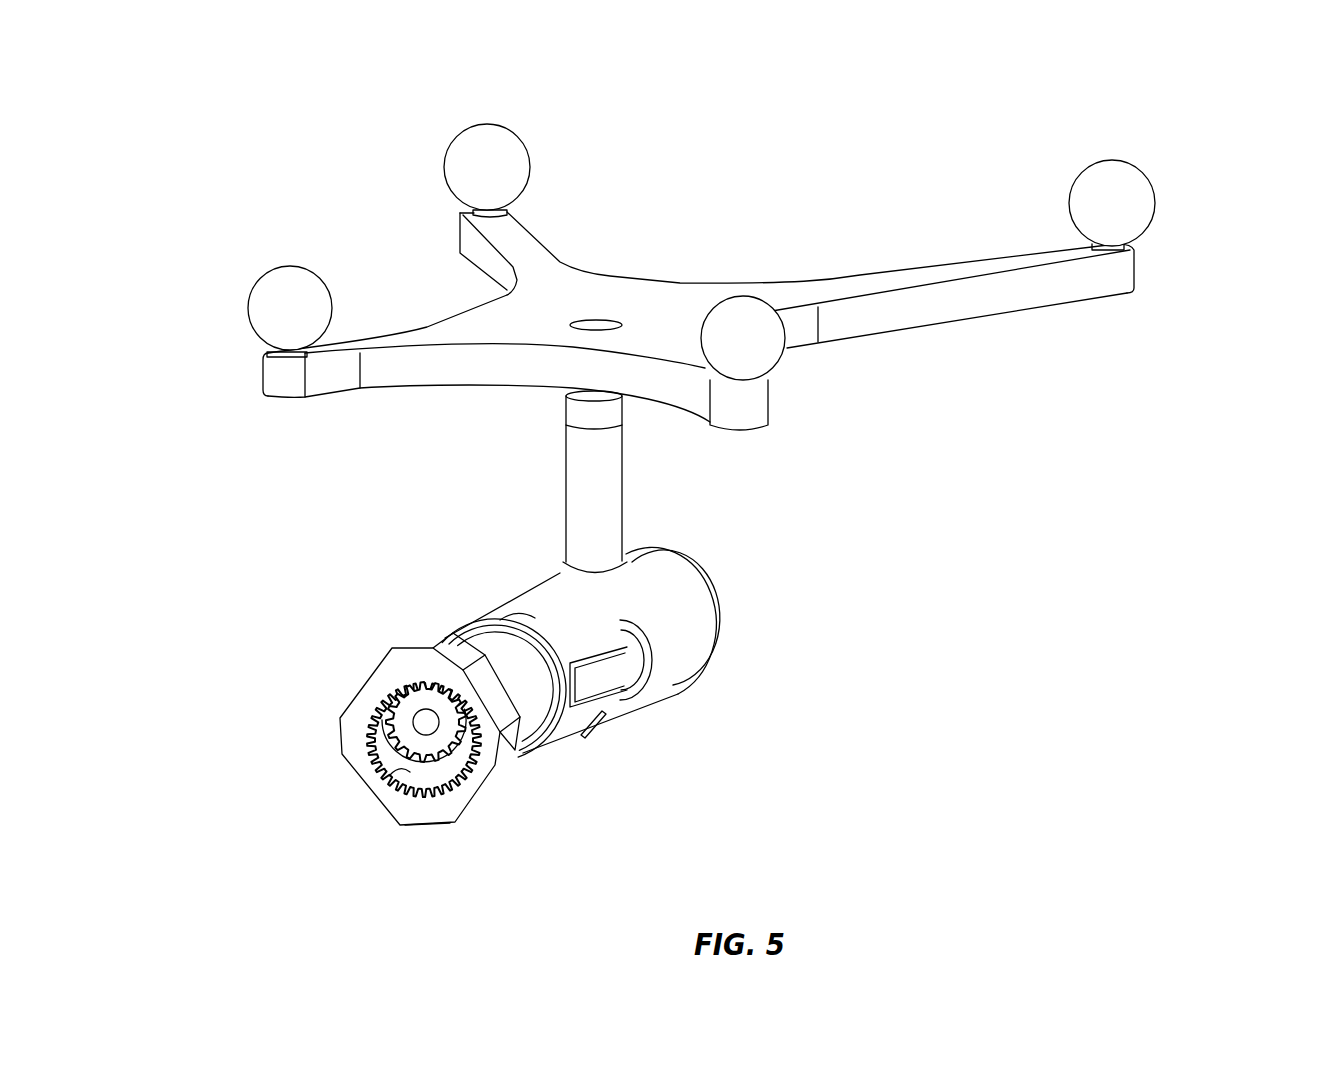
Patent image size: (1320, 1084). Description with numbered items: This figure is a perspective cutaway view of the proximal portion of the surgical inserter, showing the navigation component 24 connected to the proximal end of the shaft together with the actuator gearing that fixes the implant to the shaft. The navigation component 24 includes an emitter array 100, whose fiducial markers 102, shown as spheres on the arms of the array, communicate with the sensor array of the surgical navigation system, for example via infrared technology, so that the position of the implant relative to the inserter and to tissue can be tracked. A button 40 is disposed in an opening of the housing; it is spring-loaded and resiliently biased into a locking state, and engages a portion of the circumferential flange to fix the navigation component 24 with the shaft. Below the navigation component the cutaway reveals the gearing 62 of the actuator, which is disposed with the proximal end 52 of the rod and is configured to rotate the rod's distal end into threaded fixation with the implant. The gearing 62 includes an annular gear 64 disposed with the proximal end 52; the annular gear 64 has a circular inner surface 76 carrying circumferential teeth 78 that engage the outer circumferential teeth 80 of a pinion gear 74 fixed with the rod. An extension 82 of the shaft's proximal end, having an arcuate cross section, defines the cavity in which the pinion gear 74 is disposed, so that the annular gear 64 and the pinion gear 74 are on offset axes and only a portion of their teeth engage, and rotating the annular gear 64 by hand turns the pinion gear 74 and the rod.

The emitter array 100 is at (702, 236).
The fiducial markers 102 is at (490, 156).
The navigation component 24 is at (645, 297).
The button 40 is at (610, 673).
The proximal end 52 is at (404, 708).
The gearing 62 is at (454, 642).
The annular gear 64 is at (427, 797).
The pinion gear 74 is at (442, 687).
The circular inner surface 76 is at (378, 772).
The circumferential teeth 78 is at (452, 783).
The outer circumferential teeth 80 is at (418, 720).
The extension 82 is at (440, 770).